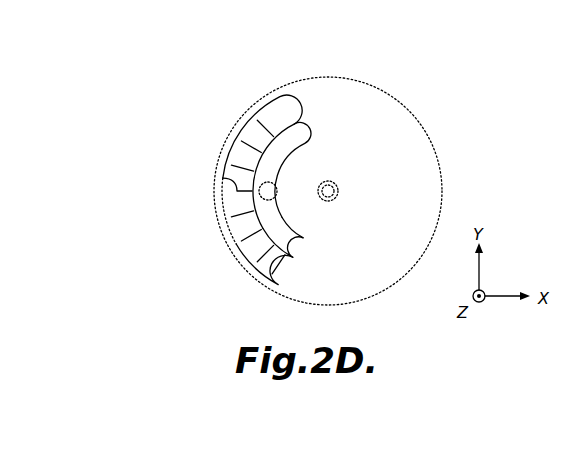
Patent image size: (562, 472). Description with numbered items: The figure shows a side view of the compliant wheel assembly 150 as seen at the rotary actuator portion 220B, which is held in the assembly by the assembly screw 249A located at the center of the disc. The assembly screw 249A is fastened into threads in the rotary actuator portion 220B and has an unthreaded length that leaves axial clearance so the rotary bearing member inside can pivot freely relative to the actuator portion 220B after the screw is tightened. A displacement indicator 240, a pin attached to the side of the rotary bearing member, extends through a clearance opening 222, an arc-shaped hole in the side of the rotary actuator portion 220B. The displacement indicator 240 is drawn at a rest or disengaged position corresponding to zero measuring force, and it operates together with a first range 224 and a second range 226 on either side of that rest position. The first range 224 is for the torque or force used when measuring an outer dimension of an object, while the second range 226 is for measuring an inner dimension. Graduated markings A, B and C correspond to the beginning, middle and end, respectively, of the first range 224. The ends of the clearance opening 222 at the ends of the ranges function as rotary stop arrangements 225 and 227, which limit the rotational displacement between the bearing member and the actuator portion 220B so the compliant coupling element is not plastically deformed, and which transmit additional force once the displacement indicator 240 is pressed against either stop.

The compliant wheel assembly 150 is at (415, 62).
The rotary actuator portion 220B is at (397, 138).
The assembly screw 249A is at (337, 186).
The displacement indicator 240 is at (278, 191).
The rotary stop arrangement 227 is at (318, 123).
The clearance opening 222 is at (302, 237).
The rotary stop arrangement 225 is at (295, 259).
The second range 226 is at (237, 133).
The first range 224 is at (240, 251).
The graduated marking A is at (225, 177).
The graduated marking B is at (254, 249).
The graduated marking C is at (286, 286).